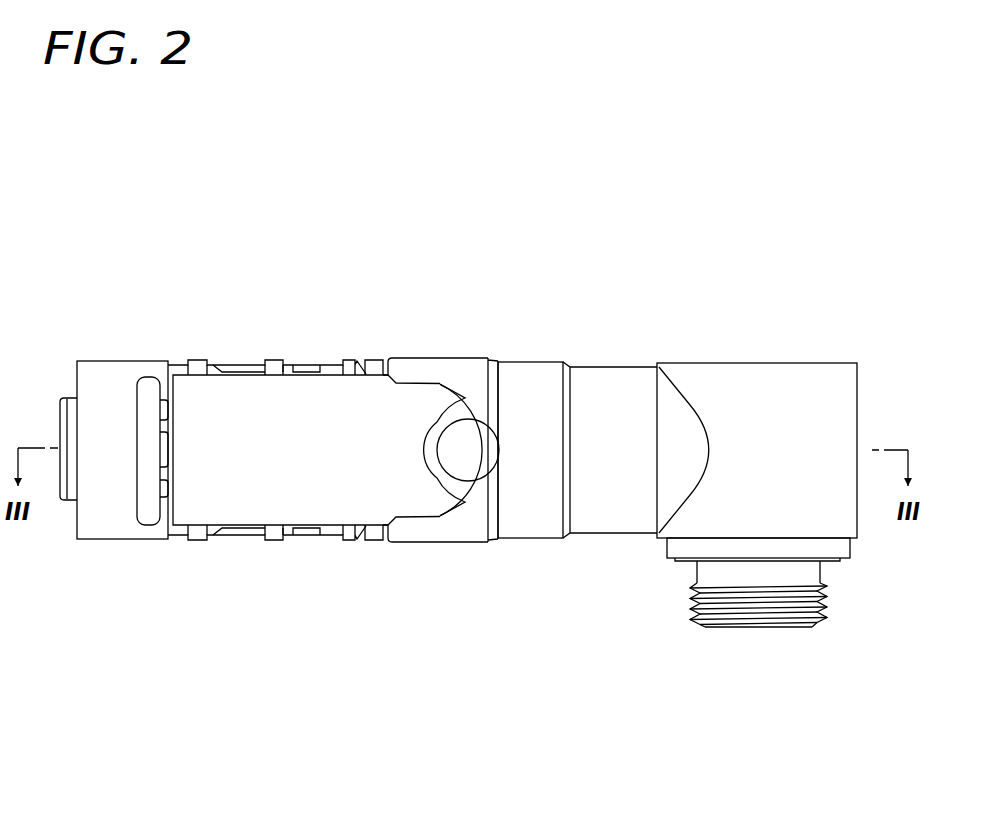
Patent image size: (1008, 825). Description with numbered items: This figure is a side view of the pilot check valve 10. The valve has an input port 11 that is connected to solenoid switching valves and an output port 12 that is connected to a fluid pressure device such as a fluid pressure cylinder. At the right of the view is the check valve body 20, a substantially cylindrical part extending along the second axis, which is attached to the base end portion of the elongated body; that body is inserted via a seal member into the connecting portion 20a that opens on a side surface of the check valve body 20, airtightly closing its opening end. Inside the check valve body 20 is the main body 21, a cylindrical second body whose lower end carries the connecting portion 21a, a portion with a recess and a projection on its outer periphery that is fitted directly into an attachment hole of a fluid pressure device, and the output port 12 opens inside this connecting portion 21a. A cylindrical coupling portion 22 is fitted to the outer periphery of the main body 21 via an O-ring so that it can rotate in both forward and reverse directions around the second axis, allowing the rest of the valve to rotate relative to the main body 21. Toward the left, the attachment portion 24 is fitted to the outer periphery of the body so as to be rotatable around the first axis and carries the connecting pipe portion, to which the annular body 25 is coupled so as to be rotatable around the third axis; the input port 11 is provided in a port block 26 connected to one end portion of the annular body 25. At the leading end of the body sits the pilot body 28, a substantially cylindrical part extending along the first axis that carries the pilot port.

The pilot check valve 10 is at (689, 249).
The input port 11 is at (137, 423).
The output port 12 is at (755, 628).
The check valve body 20 is at (794, 358).
The connecting portion 20a is at (596, 383).
The main body 21 is at (713, 571).
The connecting portion 21a is at (826, 589).
The cylindrical coupling portion 22 is at (803, 388).
The attachment portion 24 is at (465, 370).
The annular body 25 is at (323, 493).
The port block 26 is at (148, 500).
The pilot body 28 is at (93, 543).